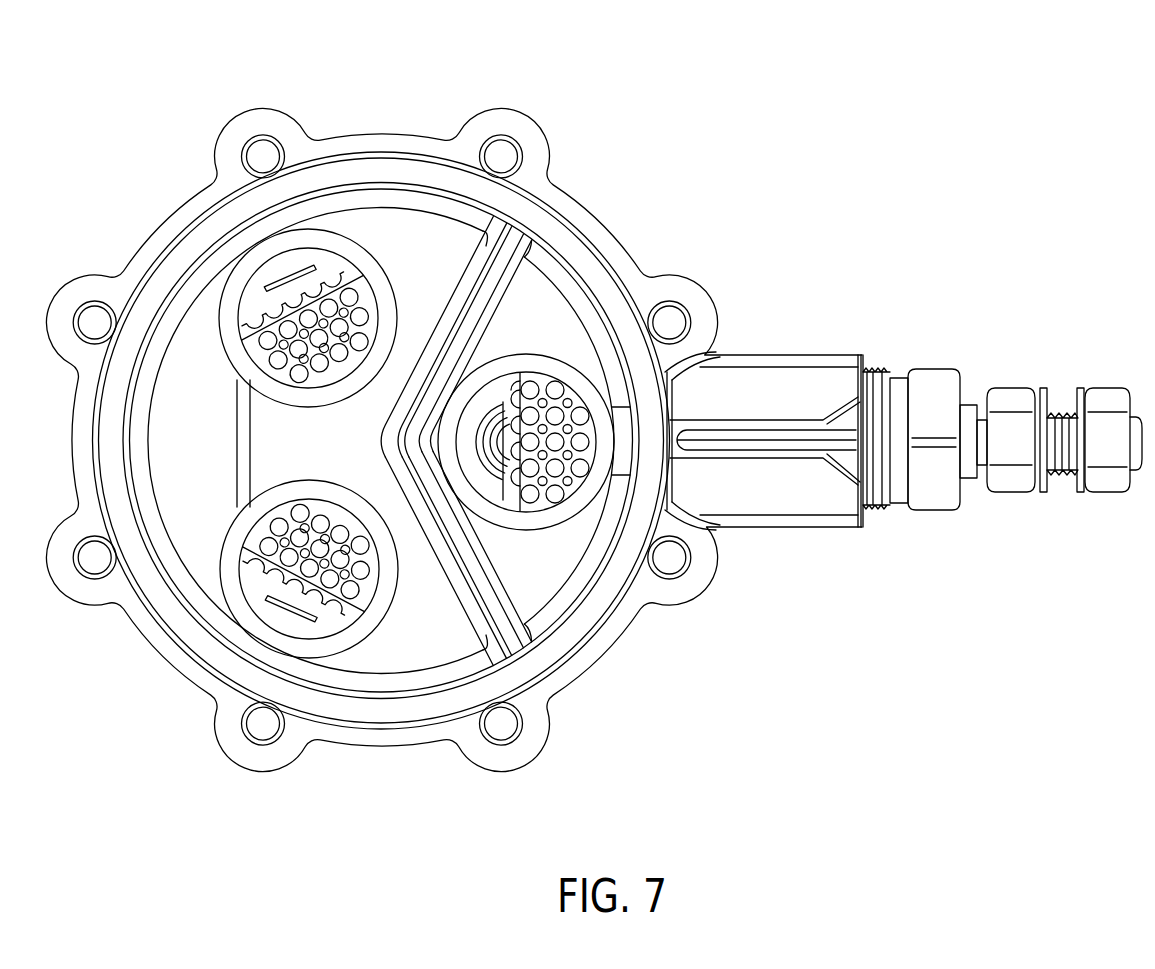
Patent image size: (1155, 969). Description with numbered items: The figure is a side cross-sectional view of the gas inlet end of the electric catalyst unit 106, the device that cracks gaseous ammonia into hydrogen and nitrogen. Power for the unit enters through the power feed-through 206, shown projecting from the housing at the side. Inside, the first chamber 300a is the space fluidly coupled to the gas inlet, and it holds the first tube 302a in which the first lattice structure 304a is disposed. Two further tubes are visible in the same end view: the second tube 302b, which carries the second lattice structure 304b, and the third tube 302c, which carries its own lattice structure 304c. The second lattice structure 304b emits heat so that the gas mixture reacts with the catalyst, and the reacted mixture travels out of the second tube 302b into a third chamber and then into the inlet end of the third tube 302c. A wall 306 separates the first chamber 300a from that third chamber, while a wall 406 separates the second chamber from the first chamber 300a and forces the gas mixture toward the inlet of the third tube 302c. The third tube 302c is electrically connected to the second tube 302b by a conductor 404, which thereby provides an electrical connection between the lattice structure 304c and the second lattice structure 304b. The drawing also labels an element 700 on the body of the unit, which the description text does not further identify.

The electric catalyst unit 106 is at (594, 440).
The power feed-through 206 is at (866, 352).
The first chamber 300a is at (557, 598).
The first tube 302a is at (619, 519).
The second tube 302b is at (306, 657).
The third tube 302c is at (273, 235).
The first lattice structure 304a is at (493, 441).
The second lattice structure 304b is at (328, 645).
The lattice structure 304c is at (268, 302).
The wall 306 is at (513, 250).
The conductor 404 is at (240, 518).
The wall 406 is at (512, 636).
The housing 700 is at (185, 300).